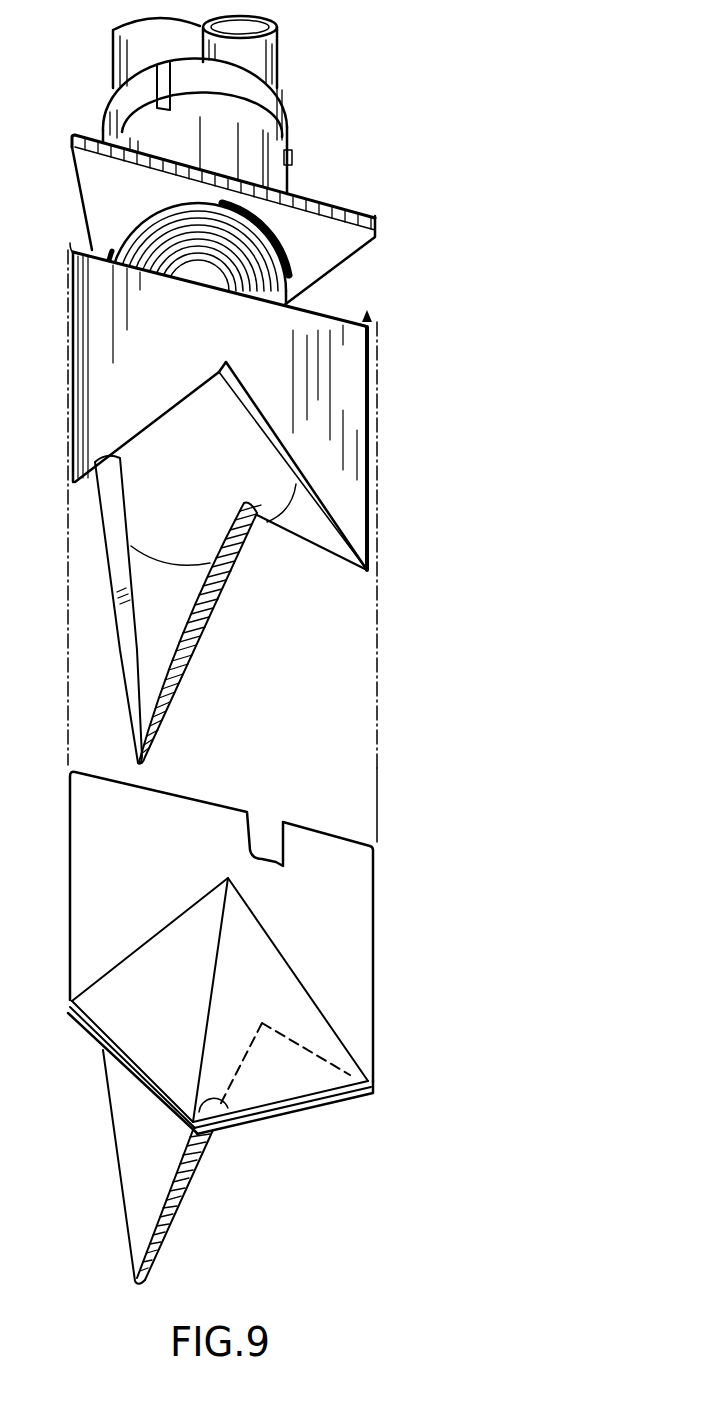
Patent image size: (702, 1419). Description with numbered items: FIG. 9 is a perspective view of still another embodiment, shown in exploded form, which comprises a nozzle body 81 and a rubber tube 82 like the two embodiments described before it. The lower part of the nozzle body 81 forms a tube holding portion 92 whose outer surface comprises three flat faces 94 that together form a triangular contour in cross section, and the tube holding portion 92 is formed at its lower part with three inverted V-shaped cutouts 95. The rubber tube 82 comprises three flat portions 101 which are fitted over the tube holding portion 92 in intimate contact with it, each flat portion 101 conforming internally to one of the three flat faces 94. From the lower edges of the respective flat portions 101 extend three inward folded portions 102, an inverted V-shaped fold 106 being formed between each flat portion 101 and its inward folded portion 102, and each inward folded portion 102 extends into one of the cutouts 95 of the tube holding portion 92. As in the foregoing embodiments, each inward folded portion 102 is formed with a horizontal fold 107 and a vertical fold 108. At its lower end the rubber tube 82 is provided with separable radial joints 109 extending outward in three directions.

The nozzle body 81 is at (284, 66).
The rubber tube 82 is at (380, 982).
The tube holding portion 92 is at (373, 449).
The flat faces 94 is at (331, 318).
The inverted V-shaped cutouts 95 is at (122, 645).
The flat portions 101 is at (347, 888).
The inward folded portions 102 is at (328, 1036).
The inverted V-shaped fold 106 is at (160, 930).
The horizontal fold 107 is at (295, 1110).
The vertical fold 108 is at (223, 1100).
The separable radial joints 109 is at (342, 1102).